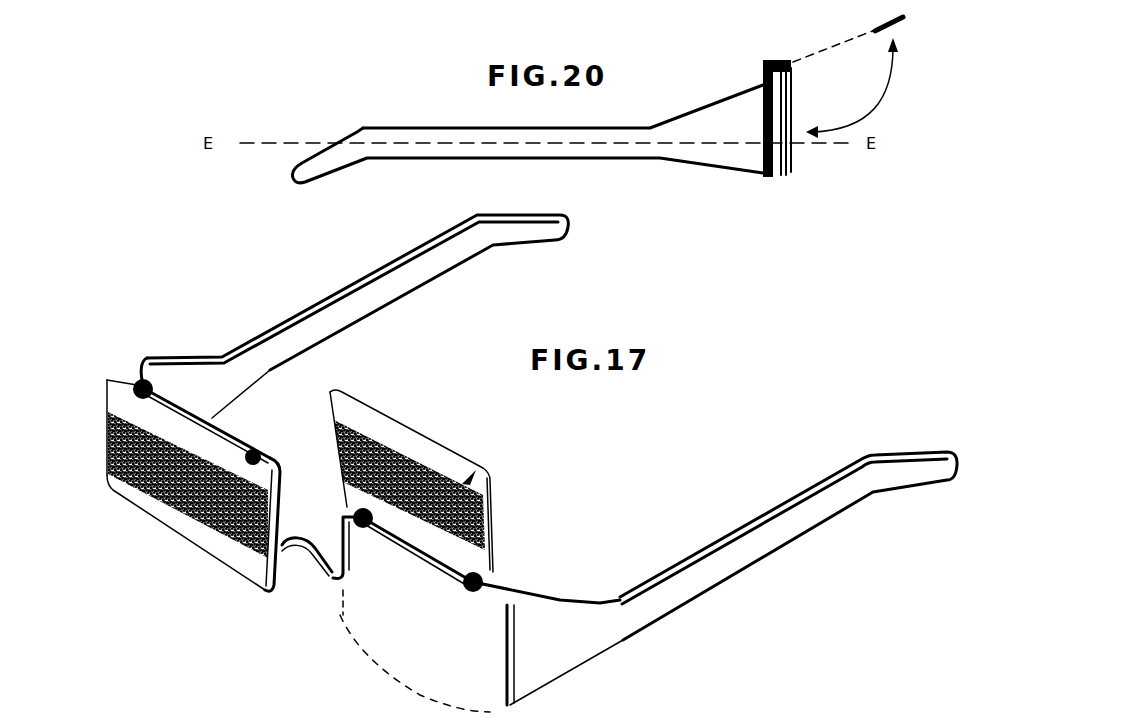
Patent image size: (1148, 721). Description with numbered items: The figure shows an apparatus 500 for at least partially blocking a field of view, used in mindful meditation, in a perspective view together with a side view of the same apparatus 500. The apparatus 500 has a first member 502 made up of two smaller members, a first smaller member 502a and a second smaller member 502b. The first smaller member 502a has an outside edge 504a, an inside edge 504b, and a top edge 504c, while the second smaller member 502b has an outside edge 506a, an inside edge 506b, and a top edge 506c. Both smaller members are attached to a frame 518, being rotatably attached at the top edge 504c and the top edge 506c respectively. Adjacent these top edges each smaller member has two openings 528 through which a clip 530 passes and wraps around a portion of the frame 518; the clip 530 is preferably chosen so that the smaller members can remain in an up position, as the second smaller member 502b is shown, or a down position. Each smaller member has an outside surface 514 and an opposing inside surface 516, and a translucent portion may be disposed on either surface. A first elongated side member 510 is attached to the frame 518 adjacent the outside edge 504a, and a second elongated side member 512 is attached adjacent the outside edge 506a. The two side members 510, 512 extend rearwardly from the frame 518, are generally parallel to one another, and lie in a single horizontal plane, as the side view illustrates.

In FIG. 20, the apparatus 500 is at (597, 120).
In FIG. 17, the apparatus 500 is at (498, 463).
In FIG. 20, the first member 502 is at (813, 158).
In FIG. 20, the first smaller member 502a is at (790, 95).
In FIG. 17, the first smaller member 502a is at (237, 577).
In FIG. 17, the second smaller member 502b is at (452, 452).
In FIG. 17, the outside edge 504a is at (103, 427).
In FIG. 17, the inside edge 504b is at (275, 590).
In FIG. 17, the top edge 504c is at (153, 522).
In FIG. 17, the outside edge 506a is at (235, 444).
In FIG. 17, the inside edge 506b is at (490, 513).
In FIG. 17, the top edge 506c is at (500, 578).
In FIG. 20, the first elongated side member 510 is at (700, 165).
In FIG. 17, the first elongated side member 510 is at (345, 287).
In FIG. 17, the second elongated side member 512 is at (773, 507).
In FIG. 17, the outside surface 514 is at (133, 498).
In FIG. 17, the inside surface 516 is at (393, 435).
In FIG. 17, the frame 518 is at (331, 574).
In FIG. 17, the openings 528 is at (143, 385).
In FIG. 17, the clip 530 is at (268, 449).